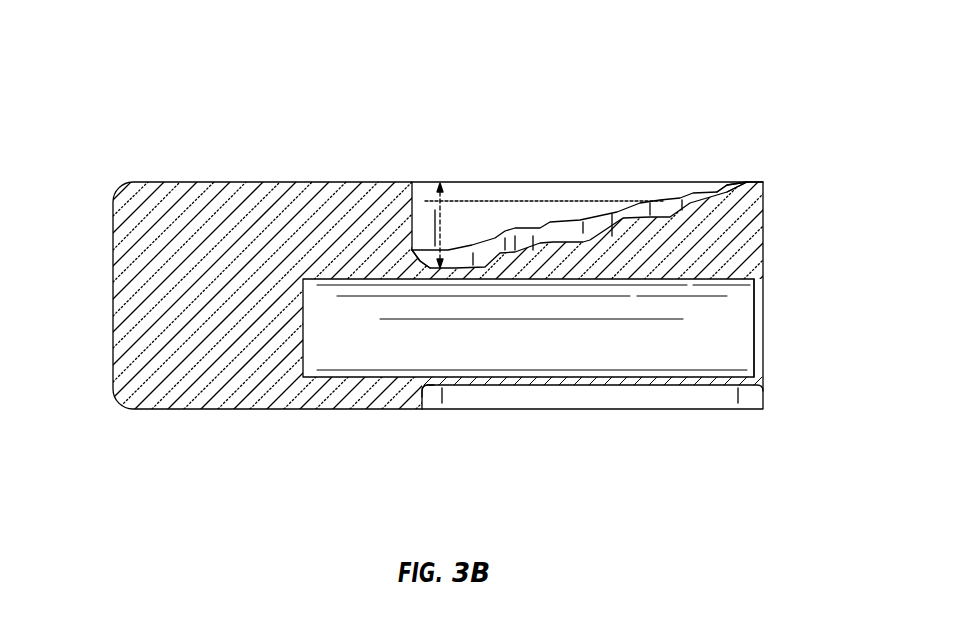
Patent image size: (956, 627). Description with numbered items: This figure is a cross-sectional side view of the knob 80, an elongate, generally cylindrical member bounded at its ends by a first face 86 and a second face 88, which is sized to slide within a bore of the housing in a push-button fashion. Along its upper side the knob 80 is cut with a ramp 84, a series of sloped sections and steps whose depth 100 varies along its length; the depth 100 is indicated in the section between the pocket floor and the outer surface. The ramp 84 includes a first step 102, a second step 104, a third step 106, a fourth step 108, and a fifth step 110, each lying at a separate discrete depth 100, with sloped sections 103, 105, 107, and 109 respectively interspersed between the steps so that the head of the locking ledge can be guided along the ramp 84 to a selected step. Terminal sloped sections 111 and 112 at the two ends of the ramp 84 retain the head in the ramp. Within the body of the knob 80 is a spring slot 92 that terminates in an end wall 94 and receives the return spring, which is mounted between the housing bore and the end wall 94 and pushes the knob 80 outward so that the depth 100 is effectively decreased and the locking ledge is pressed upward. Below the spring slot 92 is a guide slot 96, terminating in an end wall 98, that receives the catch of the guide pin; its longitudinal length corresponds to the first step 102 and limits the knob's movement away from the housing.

The knob 80 is at (105, 149).
The ramp 84 is at (745, 87).
The first face 86 is at (113, 304).
The second face 88 is at (763, 234).
The spring slot 92 is at (752, 344).
The end wall 94 is at (303, 327).
The guide slot 96 is at (510, 387).
The end wall 98 is at (422, 388).
The depth 100 is at (437, 211).
The first step 102 is at (452, 270).
The sloped section 103 is at (500, 252).
The second step 104 is at (515, 252).
The sloped section 105 is at (553, 242).
The third step 106 is at (580, 242).
The sloped section 107 is at (611, 220).
The fourth step 108 is at (656, 217).
The sloped section 109 is at (693, 202).
The fifth step 110 is at (724, 190).
The terminal sloped section 111 is at (740, 188).
The terminal sloped section 112 is at (412, 253).